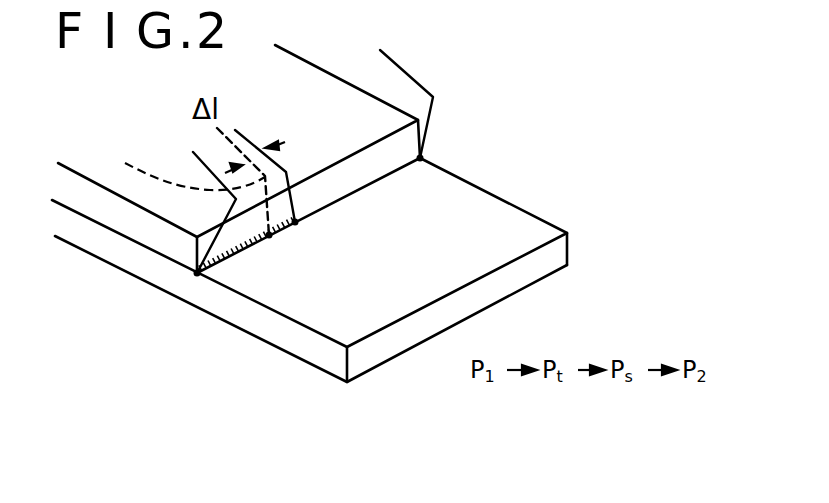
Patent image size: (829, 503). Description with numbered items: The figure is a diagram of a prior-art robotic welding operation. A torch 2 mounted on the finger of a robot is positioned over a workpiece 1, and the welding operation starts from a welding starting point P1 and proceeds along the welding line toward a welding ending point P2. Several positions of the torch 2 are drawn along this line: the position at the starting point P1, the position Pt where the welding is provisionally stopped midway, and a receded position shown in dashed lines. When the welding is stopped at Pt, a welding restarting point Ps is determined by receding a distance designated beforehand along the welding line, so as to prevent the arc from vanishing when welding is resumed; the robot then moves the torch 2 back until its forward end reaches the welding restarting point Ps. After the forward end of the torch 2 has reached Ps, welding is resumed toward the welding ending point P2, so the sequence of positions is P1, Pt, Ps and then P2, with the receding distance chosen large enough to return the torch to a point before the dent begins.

The workpiece 1 is at (495, 215).
The torch 2 is at (202, 166).
The welding starting point P1 is at (207, 288).
The welding restarting point Ps is at (280, 252).
The point Pt is at (309, 239).
The welding ending point P2 is at (441, 150).